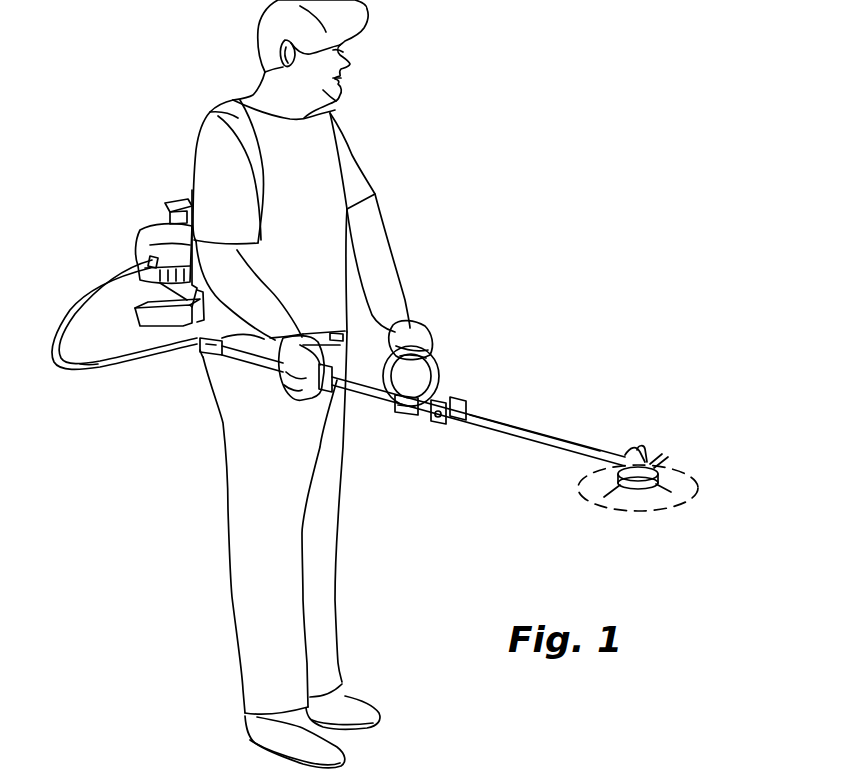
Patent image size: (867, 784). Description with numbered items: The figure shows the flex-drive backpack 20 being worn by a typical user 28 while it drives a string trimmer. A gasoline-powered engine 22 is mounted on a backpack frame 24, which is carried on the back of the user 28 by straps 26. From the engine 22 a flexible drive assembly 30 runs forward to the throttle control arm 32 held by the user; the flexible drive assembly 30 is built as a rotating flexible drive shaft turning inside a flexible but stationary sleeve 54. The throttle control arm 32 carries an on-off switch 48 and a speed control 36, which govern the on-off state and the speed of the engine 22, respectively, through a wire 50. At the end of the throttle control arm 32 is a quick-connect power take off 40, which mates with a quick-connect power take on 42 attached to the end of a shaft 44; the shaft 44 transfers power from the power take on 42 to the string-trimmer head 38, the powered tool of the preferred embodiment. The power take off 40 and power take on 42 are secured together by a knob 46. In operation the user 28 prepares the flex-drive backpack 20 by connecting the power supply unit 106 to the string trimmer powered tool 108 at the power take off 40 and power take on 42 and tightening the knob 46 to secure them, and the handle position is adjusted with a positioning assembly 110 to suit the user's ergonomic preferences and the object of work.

The flex-drive backpack 20 is at (225, 421).
The gasoline-powered engine 22 is at (168, 203).
The backpack frame 24 is at (143, 307).
The straps 26 is at (237, 117).
The user 28 is at (220, 150).
The flexible drive assembly 30 is at (83, 303).
The throttle control arm 32 is at (383, 338).
The speed control 36 is at (292, 404).
The string-trimmer head 38 is at (657, 467).
The quick-connect power take off 40 is at (440, 410).
The quick-connect power take on 42 is at (457, 420).
The shaft 44 is at (540, 433).
The knob 46 is at (433, 422).
The on-off switch 48 is at (332, 325).
The wire 50 is at (88, 367).
The sleeve 54 is at (438, 387).
The power supply unit 106 is at (197, 360).
The string trimmer powered tool 108 is at (517, 432).
The positioning assembly 110 is at (403, 420).